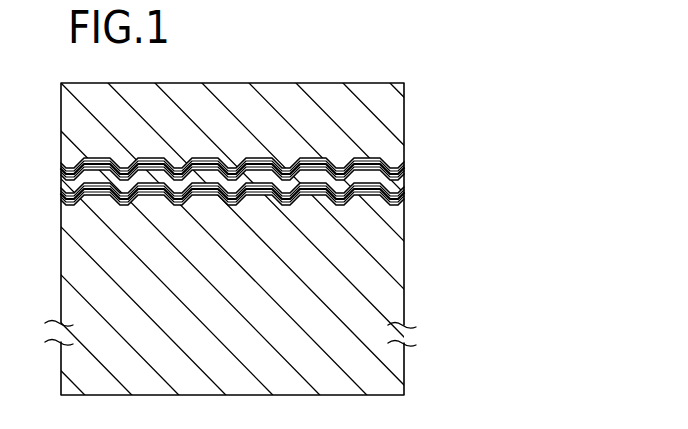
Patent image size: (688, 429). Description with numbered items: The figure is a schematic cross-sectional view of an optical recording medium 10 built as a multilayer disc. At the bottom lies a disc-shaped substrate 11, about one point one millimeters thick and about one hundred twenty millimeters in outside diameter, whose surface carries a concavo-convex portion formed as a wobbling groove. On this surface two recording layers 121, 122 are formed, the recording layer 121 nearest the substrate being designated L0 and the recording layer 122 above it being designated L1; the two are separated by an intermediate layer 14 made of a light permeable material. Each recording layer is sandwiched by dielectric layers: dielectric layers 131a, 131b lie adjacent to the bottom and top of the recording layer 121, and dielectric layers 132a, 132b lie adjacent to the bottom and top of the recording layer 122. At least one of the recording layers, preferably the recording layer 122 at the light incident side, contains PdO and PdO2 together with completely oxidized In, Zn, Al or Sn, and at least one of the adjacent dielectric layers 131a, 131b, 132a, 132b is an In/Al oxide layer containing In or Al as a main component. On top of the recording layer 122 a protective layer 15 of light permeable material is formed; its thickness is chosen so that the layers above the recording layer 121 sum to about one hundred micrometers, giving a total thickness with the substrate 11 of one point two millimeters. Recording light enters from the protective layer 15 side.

The optical recording medium 10 is at (344, 219).
The substrate 11 is at (392, 275).
The intermediate layer 14 is at (406, 185).
The protective layer 15 is at (396, 103).
The recording layer 121 is at (314, 219).
The recording layer 122 is at (314, 149).
The dielectric layer 131a is at (406, 203).
The dielectric layer 131b is at (406, 196).
The dielectric layer 132a is at (406, 174).
The dielectric layer 132b is at (399, 164).